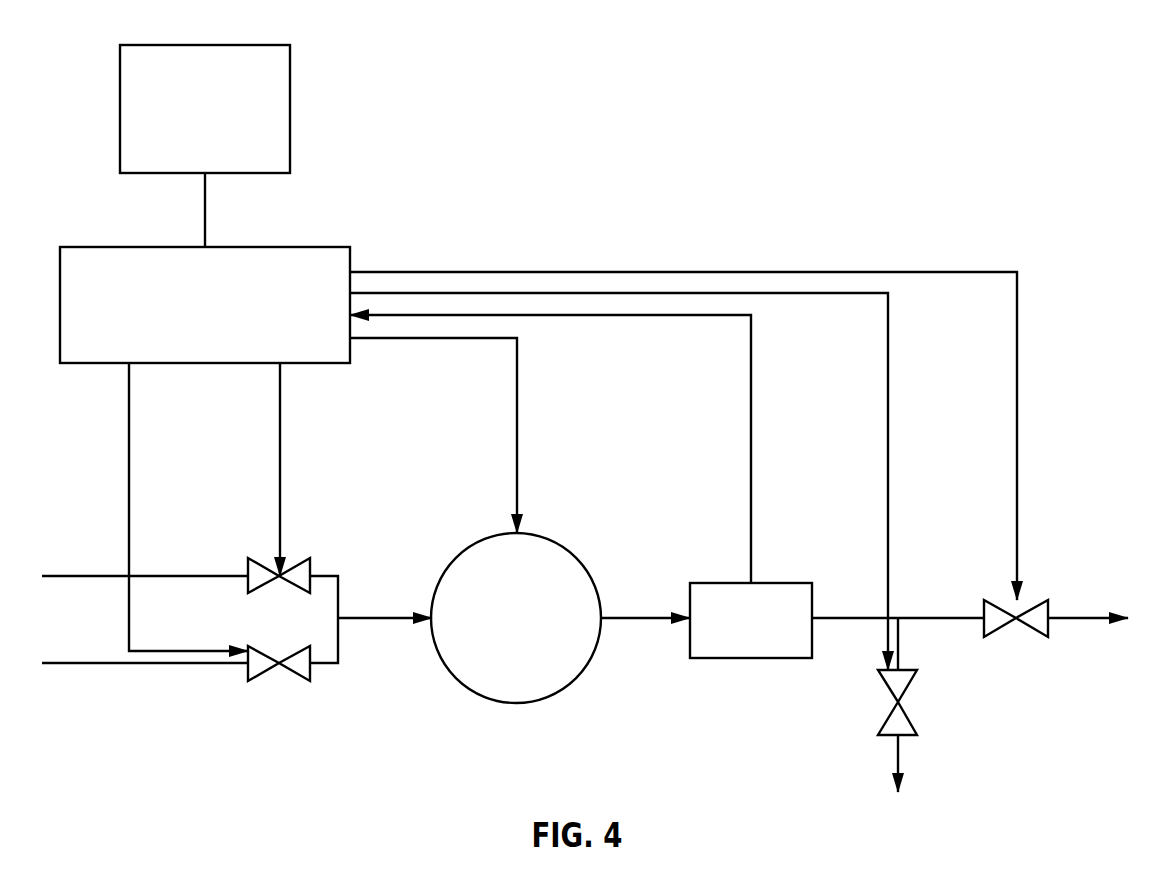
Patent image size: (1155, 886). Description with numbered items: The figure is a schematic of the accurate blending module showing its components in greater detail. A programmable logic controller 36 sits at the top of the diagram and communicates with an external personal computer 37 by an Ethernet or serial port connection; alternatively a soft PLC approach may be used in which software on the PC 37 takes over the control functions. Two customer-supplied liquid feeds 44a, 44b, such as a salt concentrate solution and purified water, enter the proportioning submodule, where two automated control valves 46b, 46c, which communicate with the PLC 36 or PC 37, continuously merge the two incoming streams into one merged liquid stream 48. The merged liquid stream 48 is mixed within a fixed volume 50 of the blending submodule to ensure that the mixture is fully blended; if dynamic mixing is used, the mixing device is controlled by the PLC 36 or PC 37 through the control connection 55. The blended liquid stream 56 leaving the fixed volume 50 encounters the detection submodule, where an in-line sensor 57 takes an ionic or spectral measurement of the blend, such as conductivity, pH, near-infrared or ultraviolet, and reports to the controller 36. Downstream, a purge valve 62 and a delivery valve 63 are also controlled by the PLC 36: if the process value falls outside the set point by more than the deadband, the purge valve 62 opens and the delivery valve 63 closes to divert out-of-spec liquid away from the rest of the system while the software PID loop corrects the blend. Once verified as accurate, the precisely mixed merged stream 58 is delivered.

The personal computer 37 is at (180, 45).
The programmable logic controller 36 is at (120, 247).
The liquid feed 44a is at (102, 576).
The liquid feed 44b is at (102, 663).
The control valve 46b is at (312, 565).
The control valve 46c is at (263, 678).
The merged liquid stream 48 is at (388, 622).
The fixed volume 50 is at (515, 707).
The mixing device control 55 is at (520, 422).
The blended liquid stream 56 is at (648, 620).
The in-line sensor 57 is at (732, 583).
The precisely mixed merged stream 58 is at (1082, 621).
The purge valve 62 is at (905, 712).
The delivery valve 63 is at (1050, 606).